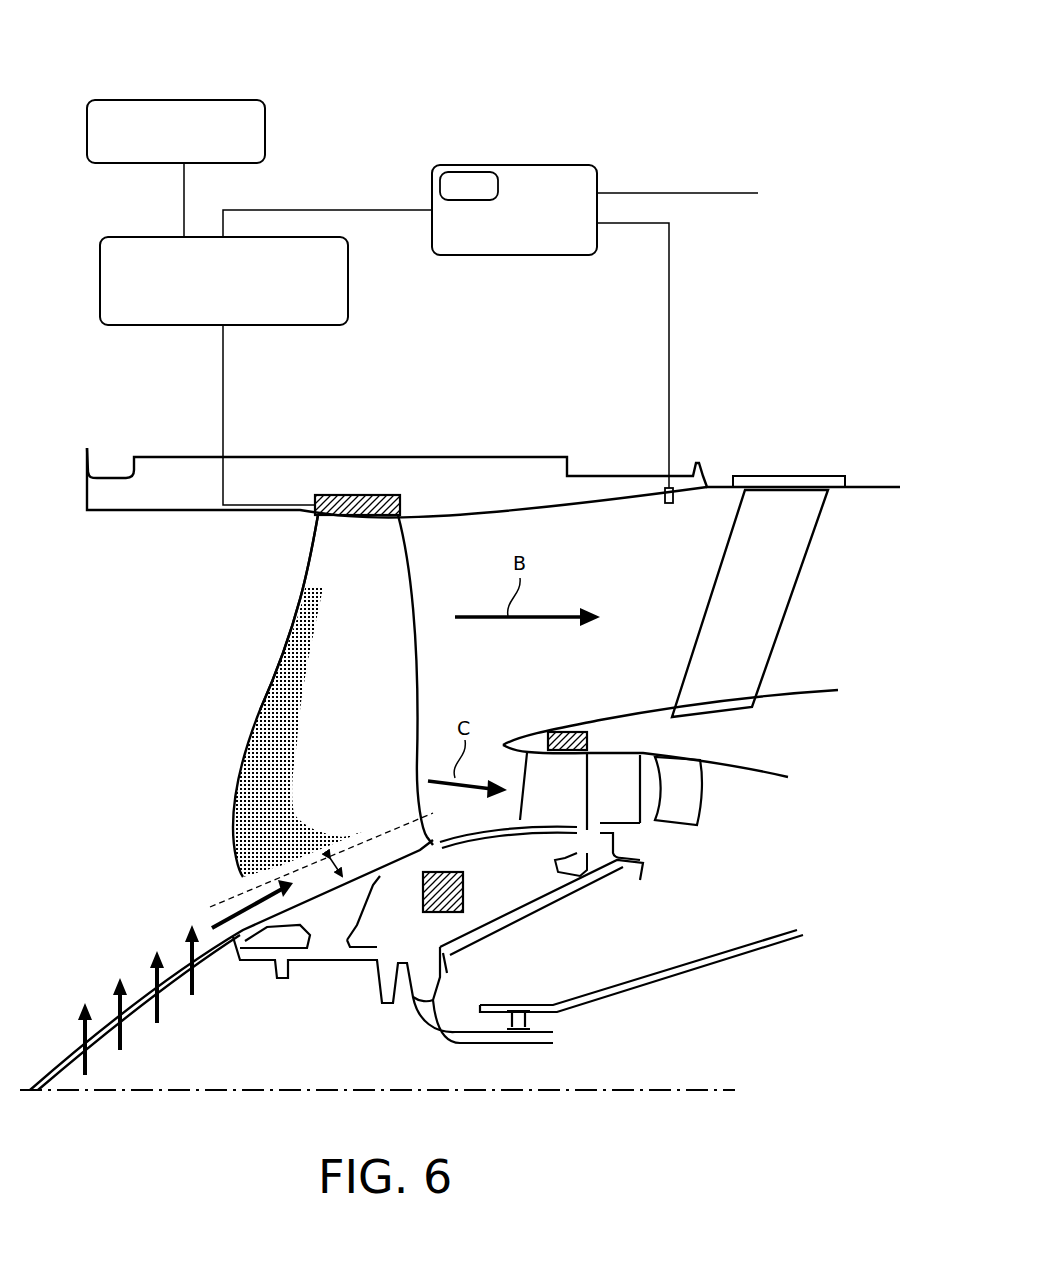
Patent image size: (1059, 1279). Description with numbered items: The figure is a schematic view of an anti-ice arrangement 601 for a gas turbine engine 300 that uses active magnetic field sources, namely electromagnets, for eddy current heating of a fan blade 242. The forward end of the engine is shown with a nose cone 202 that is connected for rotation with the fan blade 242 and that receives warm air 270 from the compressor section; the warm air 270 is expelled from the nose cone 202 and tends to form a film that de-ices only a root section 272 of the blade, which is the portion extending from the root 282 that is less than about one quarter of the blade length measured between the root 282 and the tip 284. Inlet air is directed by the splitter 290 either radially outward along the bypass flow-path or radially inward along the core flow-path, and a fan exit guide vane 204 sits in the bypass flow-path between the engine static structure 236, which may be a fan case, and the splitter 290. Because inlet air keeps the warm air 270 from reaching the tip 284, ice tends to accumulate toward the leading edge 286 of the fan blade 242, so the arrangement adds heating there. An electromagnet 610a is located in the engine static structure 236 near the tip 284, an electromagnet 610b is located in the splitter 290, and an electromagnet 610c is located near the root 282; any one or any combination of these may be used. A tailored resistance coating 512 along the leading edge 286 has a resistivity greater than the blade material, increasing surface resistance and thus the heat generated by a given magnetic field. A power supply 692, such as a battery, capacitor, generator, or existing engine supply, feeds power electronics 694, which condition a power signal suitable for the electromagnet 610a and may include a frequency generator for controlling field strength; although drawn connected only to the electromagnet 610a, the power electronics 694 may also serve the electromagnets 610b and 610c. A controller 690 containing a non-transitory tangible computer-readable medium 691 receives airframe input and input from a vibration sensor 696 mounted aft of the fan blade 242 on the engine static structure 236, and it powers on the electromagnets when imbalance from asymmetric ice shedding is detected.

The nose cone 202 is at (61, 1060).
The fan exit guide vane 204 is at (750, 603).
The engine static structure 236 is at (263, 455).
The fan blade 242 is at (321, 711).
The warm air 270 is at (128, 950).
The root section 272 is at (346, 880).
The root 282 is at (318, 887).
The tip 284 is at (386, 527).
The leading edge 286 is at (305, 583).
The splitter 290 is at (577, 722).
The gas turbine engine 300 is at (559, 353).
The tailored resistance coating 512 is at (266, 725).
The anti-ice arrangement 601 is at (604, 116).
The electromagnet 610a is at (368, 495).
The electromagnet 610b is at (556, 730).
The electromagnet 610c is at (463, 880).
The controller 690 is at (515, 165).
The non-transitory tangible computer-readable medium 691 is at (469, 186).
The power supply 692 is at (169, 100).
The power electronics 694 is at (121, 237).
The vibration sensor 696 is at (665, 502).